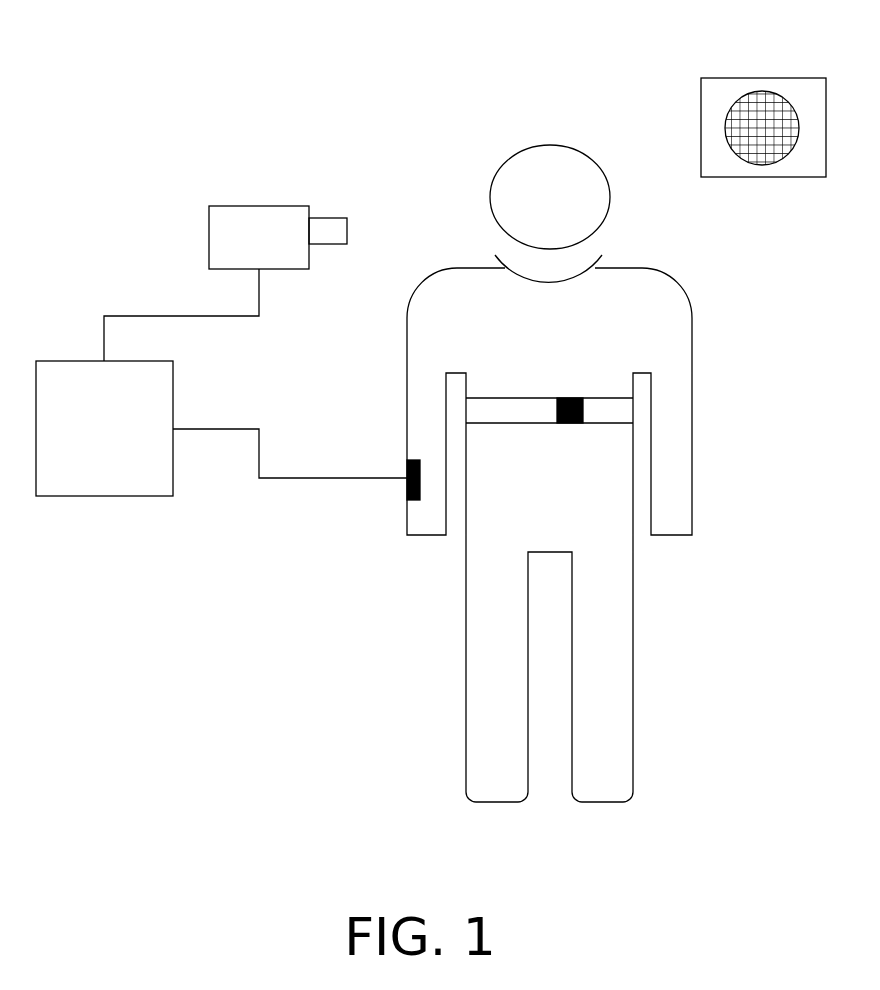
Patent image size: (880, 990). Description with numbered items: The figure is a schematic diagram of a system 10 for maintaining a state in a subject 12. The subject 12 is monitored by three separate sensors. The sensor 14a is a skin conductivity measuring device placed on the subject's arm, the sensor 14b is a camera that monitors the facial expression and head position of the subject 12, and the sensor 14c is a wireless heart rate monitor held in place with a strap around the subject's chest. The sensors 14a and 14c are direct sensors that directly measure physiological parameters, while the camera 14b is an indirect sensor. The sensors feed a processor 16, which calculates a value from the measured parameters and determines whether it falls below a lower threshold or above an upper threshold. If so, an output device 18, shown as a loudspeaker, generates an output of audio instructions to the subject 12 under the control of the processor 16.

The system 10 is at (137, 72).
The subject 12 is at (633, 670).
The skin conductivity measuring device 14a is at (405, 493).
The camera 14b is at (259, 203).
The wireless heart rate monitor 14c is at (570, 425).
The processor 16 is at (105, 500).
The output device 18 is at (763, 77).